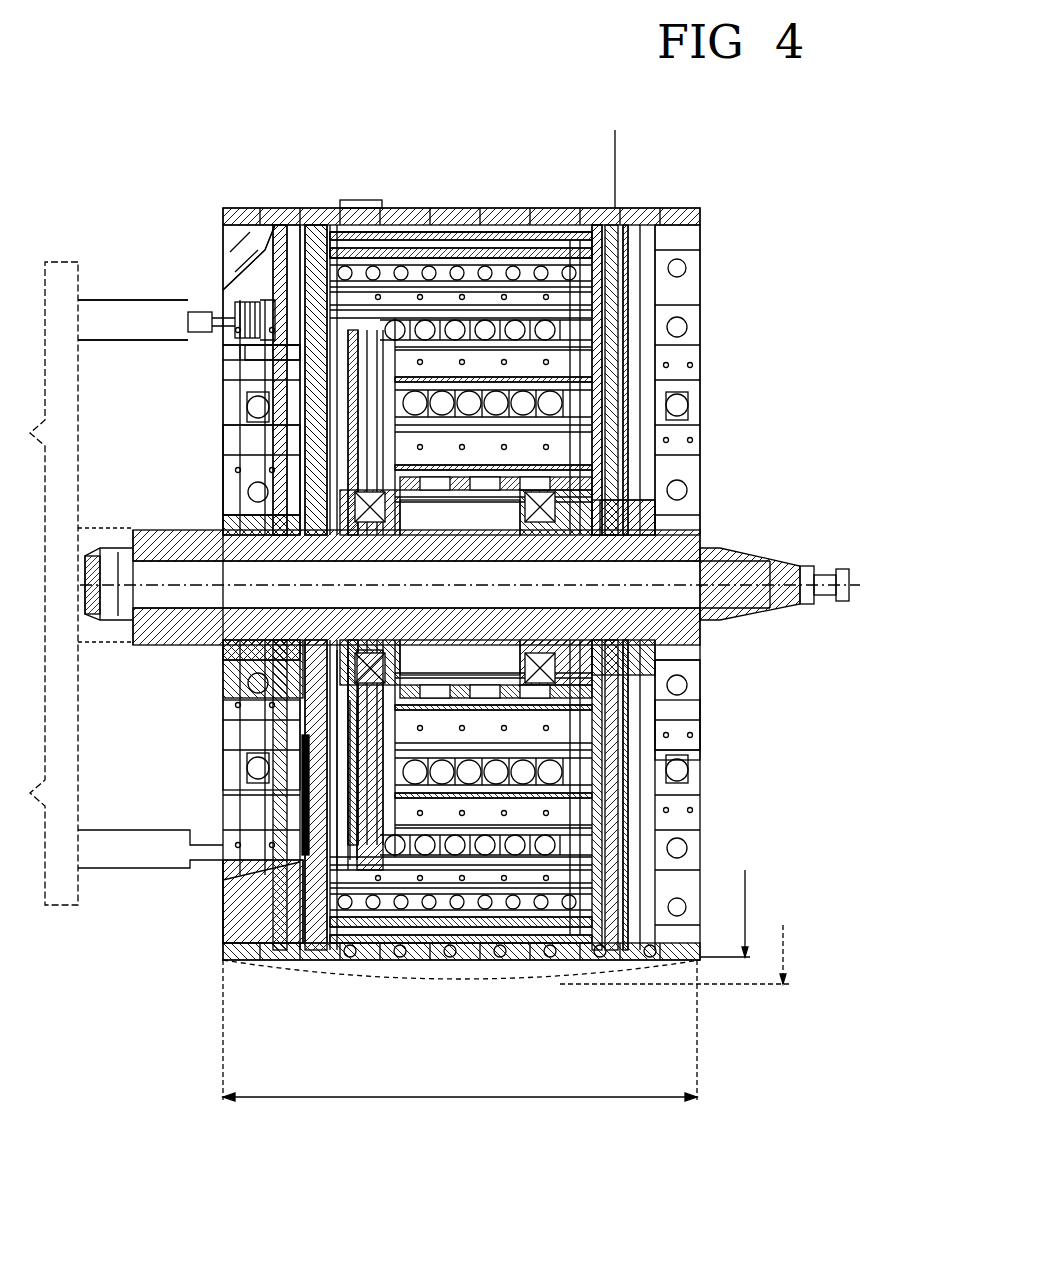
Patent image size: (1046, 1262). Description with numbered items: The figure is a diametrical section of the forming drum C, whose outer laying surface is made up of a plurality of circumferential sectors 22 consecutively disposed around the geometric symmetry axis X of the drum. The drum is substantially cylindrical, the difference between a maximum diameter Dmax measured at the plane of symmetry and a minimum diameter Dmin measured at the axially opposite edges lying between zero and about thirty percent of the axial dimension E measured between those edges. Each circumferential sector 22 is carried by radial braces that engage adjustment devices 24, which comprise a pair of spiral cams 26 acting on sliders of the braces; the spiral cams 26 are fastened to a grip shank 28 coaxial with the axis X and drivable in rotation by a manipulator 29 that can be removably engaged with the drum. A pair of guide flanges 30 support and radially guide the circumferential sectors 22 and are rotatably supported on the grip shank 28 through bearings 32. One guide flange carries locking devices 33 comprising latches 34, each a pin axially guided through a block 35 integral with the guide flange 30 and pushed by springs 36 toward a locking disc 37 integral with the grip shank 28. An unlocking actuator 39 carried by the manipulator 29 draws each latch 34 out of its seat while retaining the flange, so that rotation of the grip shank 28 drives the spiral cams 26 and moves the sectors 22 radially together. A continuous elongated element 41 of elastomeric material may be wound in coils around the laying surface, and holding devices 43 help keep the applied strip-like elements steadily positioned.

The circumferential sectors 22 is at (618, 140).
The adjustment devices 24 is at (240, 455).
The spiral cams 26 is at (228, 748).
The grip shank 28 is at (172, 648).
The manipulator 29 is at (88, 262).
The guide flanges 30 is at (320, 228).
The bearings 32 is at (700, 472).
The locking devices 33 is at (207, 352).
The latches 34 is at (205, 320).
The block 35 is at (240, 300).
The springs 36 is at (265, 355).
The locking disc 37 is at (280, 225).
The unlocking actuator 39 is at (133, 340).
The continuous elongated element 41 is at (375, 200).
The holding devices 43 is at (465, 210).
The forming drum C is at (735, 187).
The geometric symmetry axis X is at (725, 604).
The axial dimension E is at (440, 1097).
The maximum diameter Dmax is at (738, 898).
The minimum diameter Dmin is at (685, 939).